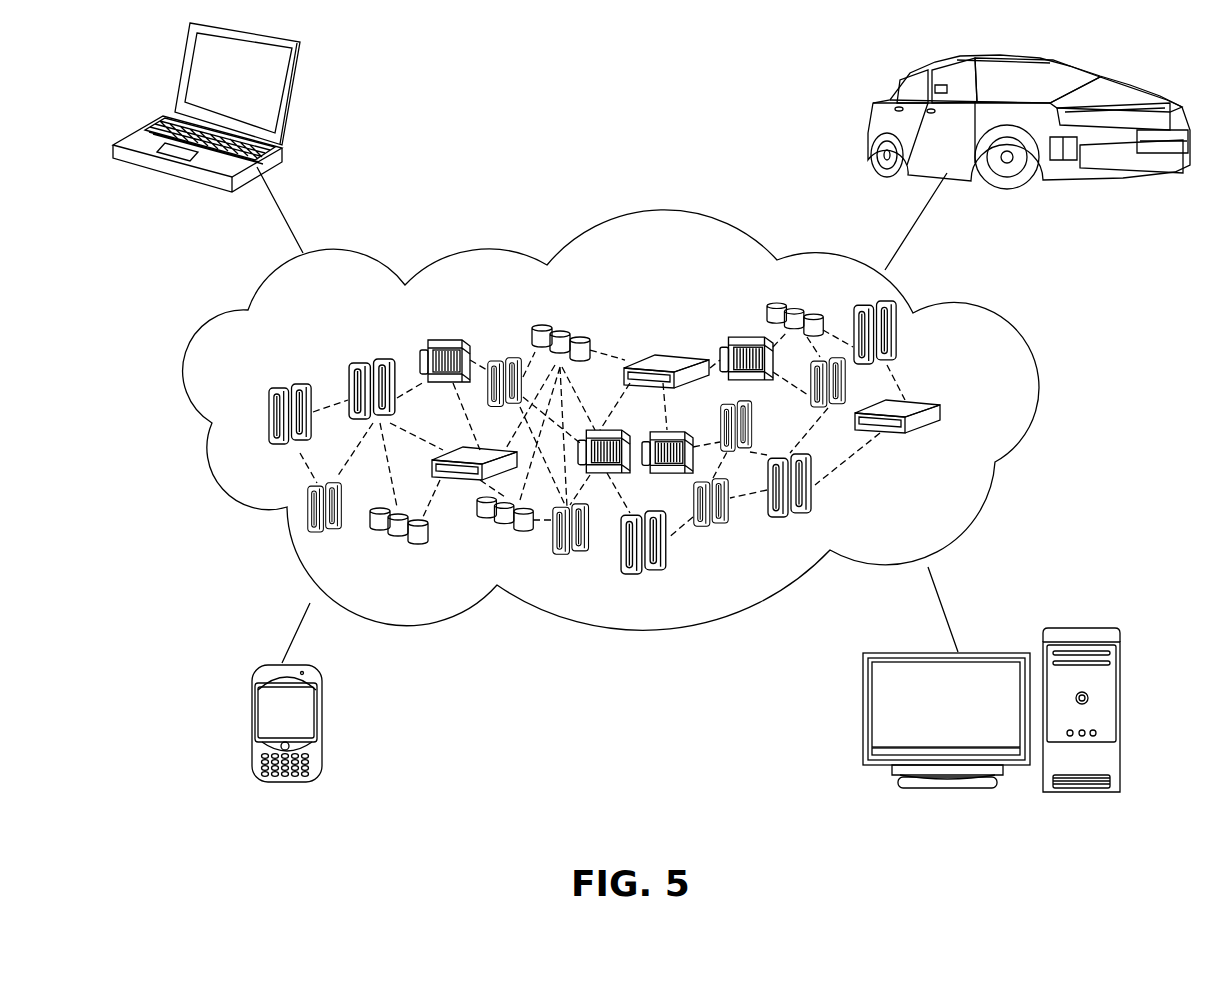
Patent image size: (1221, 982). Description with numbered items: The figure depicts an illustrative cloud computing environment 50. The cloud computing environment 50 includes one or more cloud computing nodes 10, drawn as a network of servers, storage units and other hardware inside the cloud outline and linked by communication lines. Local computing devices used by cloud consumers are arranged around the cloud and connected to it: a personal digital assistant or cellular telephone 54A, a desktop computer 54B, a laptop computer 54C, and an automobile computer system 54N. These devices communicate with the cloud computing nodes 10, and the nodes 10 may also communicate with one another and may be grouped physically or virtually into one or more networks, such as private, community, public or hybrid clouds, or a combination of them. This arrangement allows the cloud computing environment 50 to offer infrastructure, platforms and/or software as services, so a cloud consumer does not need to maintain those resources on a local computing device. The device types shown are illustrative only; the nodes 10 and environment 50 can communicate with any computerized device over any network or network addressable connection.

The cloud computing node 10 is at (980, 413).
The cloud computing environment 50 is at (1005, 327).
The personal digital assistant or cellular telephone 54A is at (250, 728).
The desktop computer 54B is at (1085, 627).
The laptop computer 54C is at (293, 95).
The automobile computer system 54N is at (873, 102).